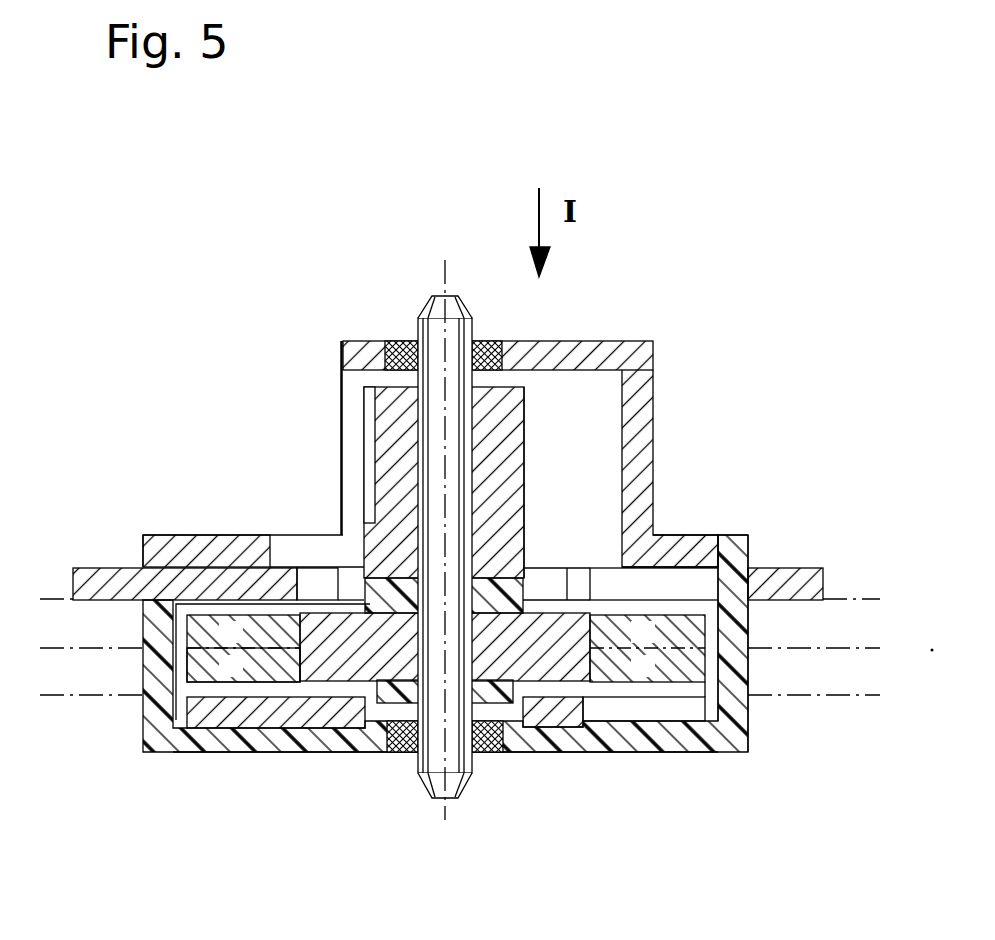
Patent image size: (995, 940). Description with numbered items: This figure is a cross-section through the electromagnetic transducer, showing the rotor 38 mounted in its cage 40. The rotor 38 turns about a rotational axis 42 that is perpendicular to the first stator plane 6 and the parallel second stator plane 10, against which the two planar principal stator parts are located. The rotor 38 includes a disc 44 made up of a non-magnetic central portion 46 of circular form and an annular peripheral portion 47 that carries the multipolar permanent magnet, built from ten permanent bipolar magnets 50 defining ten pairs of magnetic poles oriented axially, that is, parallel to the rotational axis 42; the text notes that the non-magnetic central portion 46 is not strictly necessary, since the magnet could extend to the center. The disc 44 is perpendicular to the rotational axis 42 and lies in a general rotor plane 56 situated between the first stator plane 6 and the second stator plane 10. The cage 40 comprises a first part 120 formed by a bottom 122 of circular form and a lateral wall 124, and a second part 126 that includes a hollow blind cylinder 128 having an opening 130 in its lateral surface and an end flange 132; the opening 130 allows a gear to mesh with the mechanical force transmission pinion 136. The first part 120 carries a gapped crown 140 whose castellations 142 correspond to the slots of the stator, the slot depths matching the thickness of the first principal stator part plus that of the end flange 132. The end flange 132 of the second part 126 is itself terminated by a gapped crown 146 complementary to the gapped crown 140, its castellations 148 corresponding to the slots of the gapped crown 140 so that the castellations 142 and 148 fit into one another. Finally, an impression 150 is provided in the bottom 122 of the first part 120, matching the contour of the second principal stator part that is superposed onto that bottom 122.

The first stator plane 6 is at (47, 594).
The second stator plane 10 is at (96, 704).
The rotor 38 is at (540, 478).
The cage 40 is at (668, 410).
The rotational axis 42 is at (442, 276).
The disc 44 is at (373, 710).
The non-magnetic central portion 46 is at (352, 657).
The annular peripheral portion 47 is at (273, 667).
The permanent bipolar magnets 50 is at (176, 720).
The general rotor plane 56 is at (55, 657).
The first part 120 is at (730, 742).
The bottom 122 is at (630, 743).
The lateral wall 124 is at (737, 665).
The second part 126 is at (670, 540).
The hollow blind cylinder 128 is at (642, 375).
The opening 130 is at (403, 448).
The end flange 132 is at (225, 548).
The mechanical force transmission pinion 136 is at (330, 447).
The gapped crown 140 is at (753, 545).
The castellations 142 is at (732, 543).
The gapped crown 146 is at (157, 530).
The castellations 148 is at (147, 550).
The impression 150 is at (337, 742).